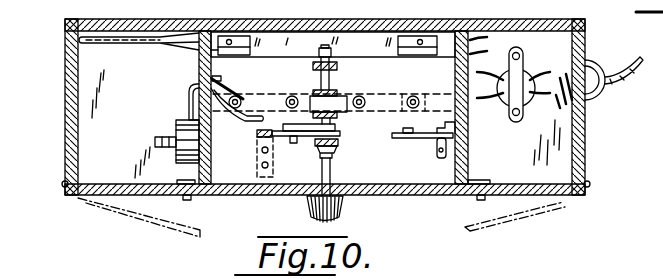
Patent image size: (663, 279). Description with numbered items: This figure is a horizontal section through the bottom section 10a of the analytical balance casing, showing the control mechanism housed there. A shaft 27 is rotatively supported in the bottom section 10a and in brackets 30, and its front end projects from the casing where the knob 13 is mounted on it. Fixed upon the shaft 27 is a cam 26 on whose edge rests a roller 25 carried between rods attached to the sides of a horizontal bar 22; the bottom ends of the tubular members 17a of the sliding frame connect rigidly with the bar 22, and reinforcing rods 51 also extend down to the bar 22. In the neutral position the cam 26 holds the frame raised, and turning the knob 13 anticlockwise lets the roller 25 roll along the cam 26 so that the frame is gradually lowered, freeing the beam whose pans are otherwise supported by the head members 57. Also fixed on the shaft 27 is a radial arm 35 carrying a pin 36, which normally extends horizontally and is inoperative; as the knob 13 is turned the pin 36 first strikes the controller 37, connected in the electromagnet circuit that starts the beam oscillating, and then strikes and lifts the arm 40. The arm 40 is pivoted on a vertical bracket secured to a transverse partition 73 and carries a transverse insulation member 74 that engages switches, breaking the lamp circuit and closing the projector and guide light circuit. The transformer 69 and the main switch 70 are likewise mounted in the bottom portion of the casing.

The bottom section 10a is at (74, 89).
The knob 13 is at (346, 210).
The tubular members 17a is at (226, 93).
The horizontal bar 22 is at (386, 97).
The roller 25 is at (312, 94).
The cam 26 is at (345, 98).
The shaft 27 is at (333, 170).
The brackets 30 is at (334, 66).
The radial arm 35 is at (337, 127).
The pin 36 is at (293, 143).
The controller 37 is at (258, 142).
The arm 40 is at (418, 137).
The rods 51 is at (423, 93).
The head members 57 is at (200, 82).
The transformer 69 is at (524, 68).
The main switch 70 is at (183, 124).
The transverse partition 73 is at (462, 148).
The insulation member 74 is at (418, 163).